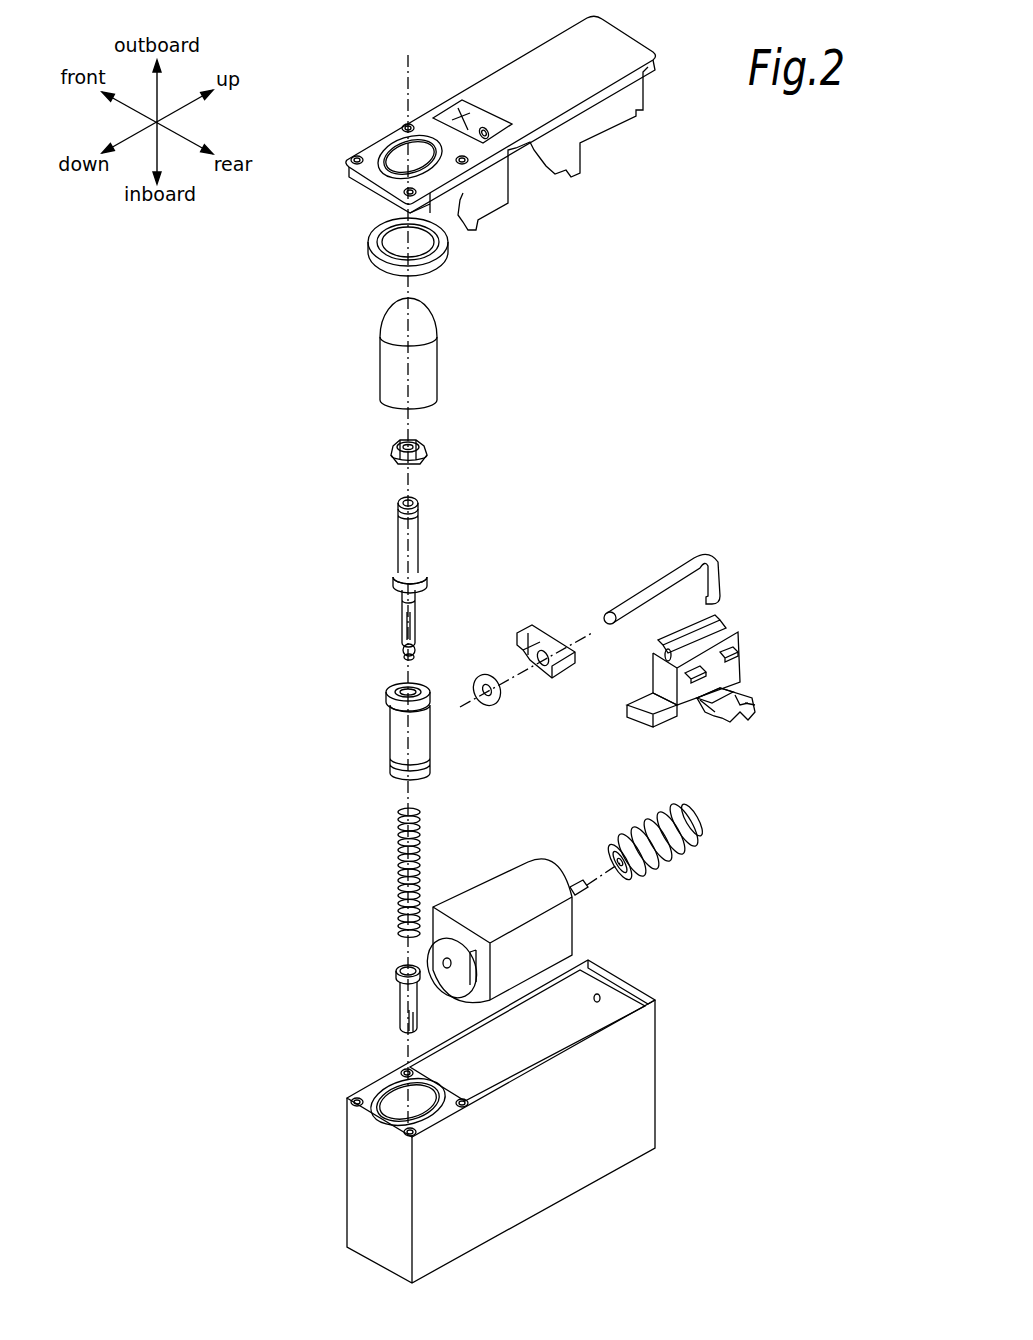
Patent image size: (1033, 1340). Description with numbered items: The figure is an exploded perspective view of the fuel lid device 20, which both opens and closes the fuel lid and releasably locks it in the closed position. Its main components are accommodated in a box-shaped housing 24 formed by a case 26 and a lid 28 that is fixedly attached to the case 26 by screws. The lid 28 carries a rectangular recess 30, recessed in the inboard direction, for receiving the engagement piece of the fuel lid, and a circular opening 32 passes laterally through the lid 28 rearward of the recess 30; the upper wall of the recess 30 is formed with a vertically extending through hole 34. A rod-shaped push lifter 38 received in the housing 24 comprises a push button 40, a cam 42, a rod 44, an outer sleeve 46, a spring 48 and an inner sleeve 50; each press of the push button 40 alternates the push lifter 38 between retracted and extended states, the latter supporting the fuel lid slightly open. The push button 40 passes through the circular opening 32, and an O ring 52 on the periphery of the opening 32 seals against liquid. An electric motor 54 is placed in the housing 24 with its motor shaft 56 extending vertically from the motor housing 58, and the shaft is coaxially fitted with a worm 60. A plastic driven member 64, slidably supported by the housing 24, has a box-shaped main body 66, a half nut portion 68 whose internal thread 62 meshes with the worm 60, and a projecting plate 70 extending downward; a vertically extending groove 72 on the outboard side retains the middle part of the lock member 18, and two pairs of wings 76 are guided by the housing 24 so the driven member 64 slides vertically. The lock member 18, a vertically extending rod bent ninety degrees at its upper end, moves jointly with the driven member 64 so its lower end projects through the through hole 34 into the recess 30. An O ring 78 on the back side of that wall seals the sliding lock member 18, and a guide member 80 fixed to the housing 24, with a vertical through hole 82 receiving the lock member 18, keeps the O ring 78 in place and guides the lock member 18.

The lock member 18 is at (647, 595).
The fuel lid device 20 is at (720, 416).
The housing 24 is at (515, 1121).
The case 26 is at (358, 1160).
The lid 28 is at (617, 38).
The recess 30 is at (463, 122).
The circular opening 32 is at (392, 146).
The through hole 34 is at (482, 130).
The push lifter 38 is at (311, 414).
The push button 40 is at (380, 350).
The cam 42 is at (397, 449).
The rod 44 is at (398, 548).
The outer sleeve 46 is at (396, 733).
The spring 48 is at (397, 842).
The inner sleeve 50 is at (402, 1004).
The O ring 52 is at (373, 231).
The electric motor 54 is at (511, 858).
The motor shaft 56 is at (576, 882).
The motor housing 58 is at (564, 923).
The worm 60 is at (681, 866).
The internal thread 62 is at (735, 733).
The driven member 64 is at (751, 619).
The main body 66 is at (746, 667).
The half nut portion 68 is at (709, 720).
The projecting plate 70 is at (644, 706).
The groove 72 is at (722, 627).
The wings 76 is at (739, 652).
The O ring 78 is at (480, 676).
The guide member 80 is at (546, 653).
The through hole 82 is at (547, 665).